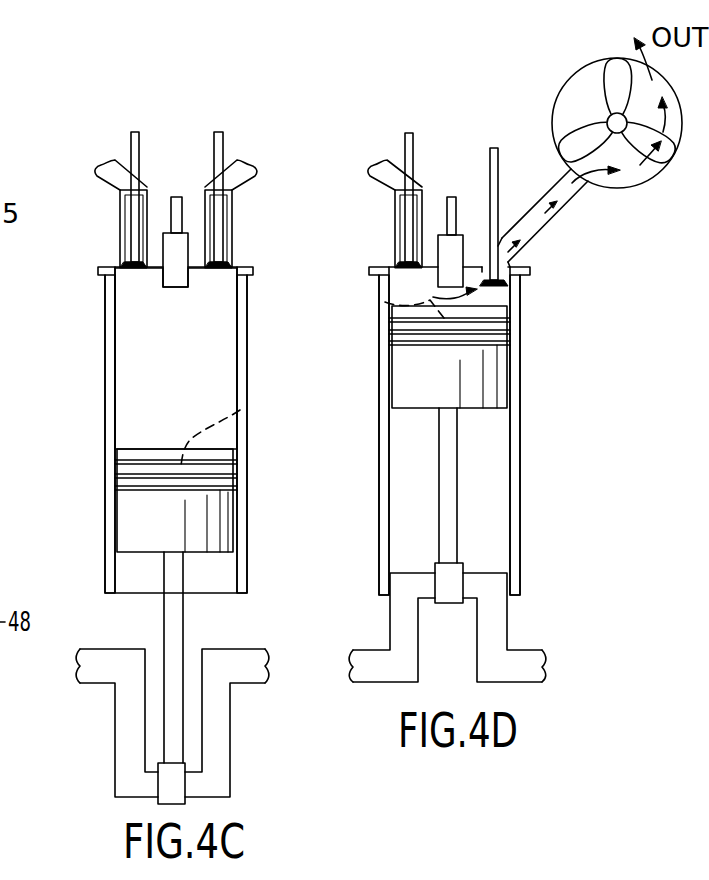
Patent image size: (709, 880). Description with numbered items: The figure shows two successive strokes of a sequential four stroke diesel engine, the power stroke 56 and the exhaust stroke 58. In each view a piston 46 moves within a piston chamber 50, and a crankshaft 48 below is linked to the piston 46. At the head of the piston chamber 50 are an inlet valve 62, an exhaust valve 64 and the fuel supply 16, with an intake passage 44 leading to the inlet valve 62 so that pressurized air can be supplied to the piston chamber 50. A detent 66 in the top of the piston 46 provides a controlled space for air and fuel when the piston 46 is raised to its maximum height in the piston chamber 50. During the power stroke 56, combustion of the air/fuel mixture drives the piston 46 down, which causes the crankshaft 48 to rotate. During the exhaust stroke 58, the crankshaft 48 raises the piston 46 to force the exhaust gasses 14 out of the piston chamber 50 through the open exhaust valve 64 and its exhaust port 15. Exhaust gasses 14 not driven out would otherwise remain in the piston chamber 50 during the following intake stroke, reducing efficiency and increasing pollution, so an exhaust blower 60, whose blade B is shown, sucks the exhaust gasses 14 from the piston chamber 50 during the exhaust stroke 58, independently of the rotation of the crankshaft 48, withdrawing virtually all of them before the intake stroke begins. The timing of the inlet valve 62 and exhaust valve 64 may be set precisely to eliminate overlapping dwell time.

In FIG. 4D, the exhaust gasses 14 is at (560, 220).
In FIG. 4C, the exhaust port 15 is at (245, 197).
In FIG. 4D, the exhaust port 15 is at (525, 242).
In FIG. 4C, the fuel supply 16 is at (171, 232).
In FIG. 4D, the fuel supply 16 is at (447, 232).
In FIG. 4C, the intake passage 44 is at (110, 185).
In FIG. 4D, the intake passage 44 is at (380, 190).
In FIG. 4C, the piston 46 is at (130, 528).
In FIG. 4D, the piston 46 is at (407, 387).
In FIG. 4C, the crankshaft 48 is at (230, 730).
In FIG. 4D, the crankshaft 48 is at (507, 623).
In FIG. 4C, the piston chamber 50 is at (125, 413).
In FIG. 4D, the piston chamber 50 is at (400, 517).
In FIG. 4C, the power stroke 56 is at (100, 555).
In FIG. 4D, the exhaust stroke 58 is at (370, 548).
In FIG. 4D, the exhaust blower 60 is at (650, 182).
In FIG. 4C, the inlet valve 62 is at (131, 140).
In FIG. 4D, the inlet valve 62 is at (405, 140).
In FIG. 4C, the exhaust valve 64 is at (214, 148).
In FIG. 4D, the exhaust valve 64 is at (490, 158).
In FIG. 4C, the detent 66 is at (240, 410).
In FIG. 4D, the detent 66 is at (385, 300).
In FIG. 4D, the turbine blade B is at (558, 87).